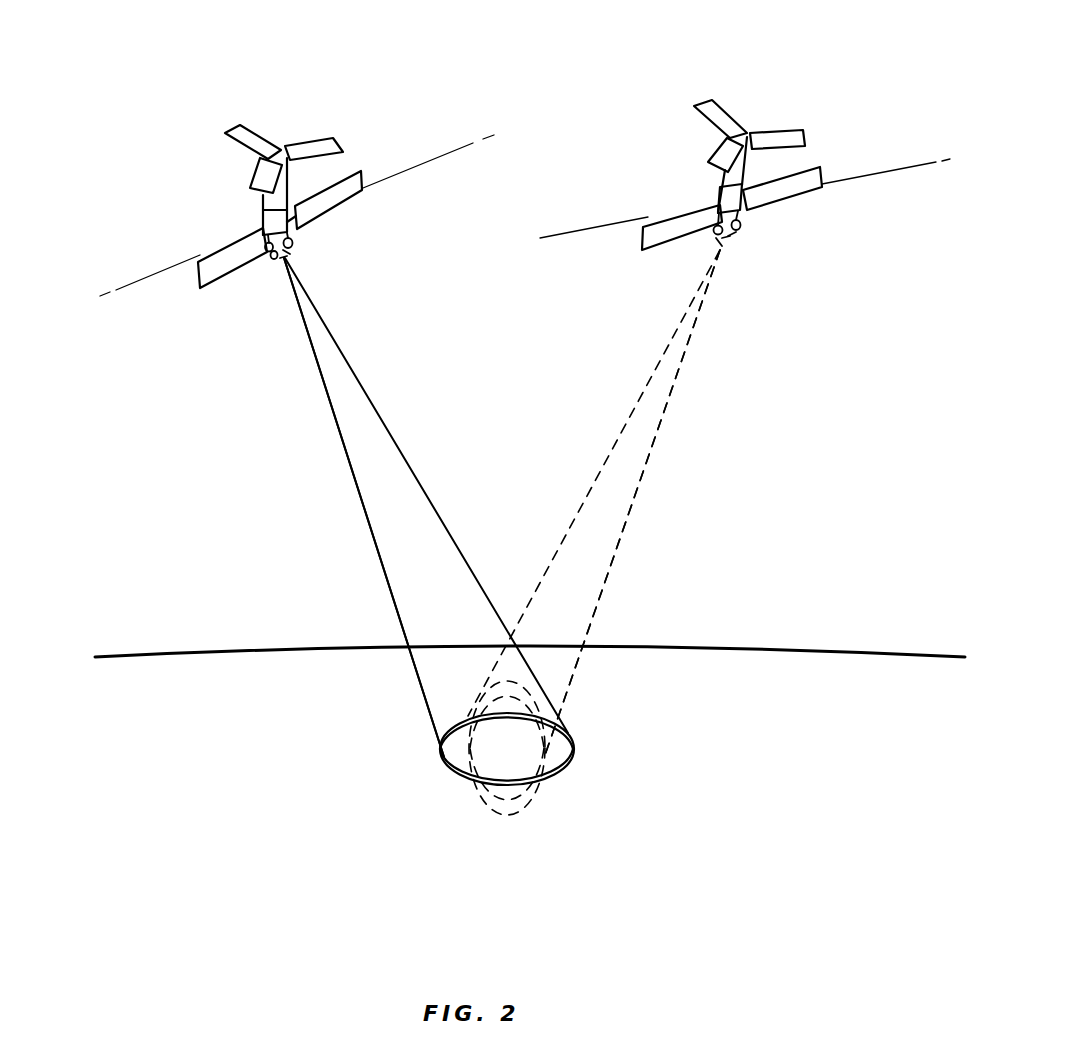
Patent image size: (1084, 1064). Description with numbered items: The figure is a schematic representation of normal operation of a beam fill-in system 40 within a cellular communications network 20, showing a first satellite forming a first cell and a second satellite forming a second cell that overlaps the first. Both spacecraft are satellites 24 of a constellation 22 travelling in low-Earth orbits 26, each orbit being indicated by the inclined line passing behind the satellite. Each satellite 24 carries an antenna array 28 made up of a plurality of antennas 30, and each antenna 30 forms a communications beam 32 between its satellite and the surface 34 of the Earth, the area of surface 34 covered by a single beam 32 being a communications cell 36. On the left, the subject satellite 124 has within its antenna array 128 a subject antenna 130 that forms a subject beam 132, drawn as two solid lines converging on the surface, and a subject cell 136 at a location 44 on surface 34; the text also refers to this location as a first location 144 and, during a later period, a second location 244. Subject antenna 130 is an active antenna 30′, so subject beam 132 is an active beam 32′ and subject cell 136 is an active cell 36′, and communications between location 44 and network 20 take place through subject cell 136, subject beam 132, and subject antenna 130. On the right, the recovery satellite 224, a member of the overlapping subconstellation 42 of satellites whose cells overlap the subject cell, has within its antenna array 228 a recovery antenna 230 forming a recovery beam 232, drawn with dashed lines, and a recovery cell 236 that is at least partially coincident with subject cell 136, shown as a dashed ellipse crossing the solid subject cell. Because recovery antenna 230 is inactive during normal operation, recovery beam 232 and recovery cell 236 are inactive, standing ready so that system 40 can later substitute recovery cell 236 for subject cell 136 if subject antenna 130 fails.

The cellular communications network 20 is at (847, 861).
The constellation 22 is at (740, 57).
The satellite 24 is at (263, 215).
The low-Earth orbit 26 is at (413, 166).
The antenna array 28 is at (282, 261).
The antenna 30 is at (270, 258).
The active antenna 30′ is at (293, 243).
The communications beam 32 is at (346, 412).
The active beam 32′ is at (360, 453).
The surface of the Earth 34 is at (755, 658).
The communications cell 36 is at (555, 773).
The active cell 36′ is at (573, 758).
The beam fill-in system 40 is at (847, 817).
The overlapping subconstellation 42 is at (674, 112).
The location 44 is at (375, 780).
The subject satellite 124 is at (334, 142).
The antenna array of subject satellite 128 is at (287, 257).
The subject antenna 130 is at (266, 239).
The subject beam 132 is at (377, 507).
The subject cell 136 is at (573, 743).
The first location 144 is at (374, 743).
The recovery satellite 224 is at (787, 137).
The antenna array of recovery satellite 228 is at (723, 243).
The recovery antenna 230 is at (717, 250).
The recovery beam 232 is at (620, 508).
The recovery cell 236 is at (487, 806).
The second location 244 is at (374, 710).